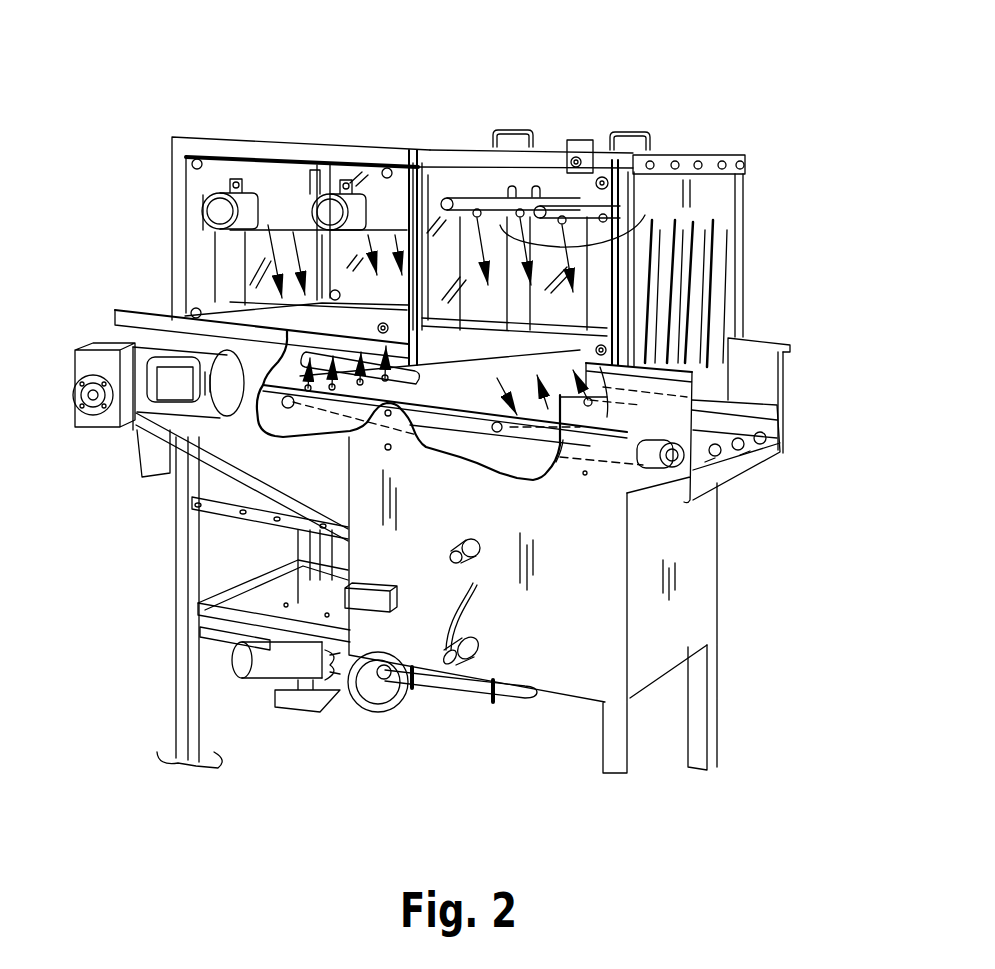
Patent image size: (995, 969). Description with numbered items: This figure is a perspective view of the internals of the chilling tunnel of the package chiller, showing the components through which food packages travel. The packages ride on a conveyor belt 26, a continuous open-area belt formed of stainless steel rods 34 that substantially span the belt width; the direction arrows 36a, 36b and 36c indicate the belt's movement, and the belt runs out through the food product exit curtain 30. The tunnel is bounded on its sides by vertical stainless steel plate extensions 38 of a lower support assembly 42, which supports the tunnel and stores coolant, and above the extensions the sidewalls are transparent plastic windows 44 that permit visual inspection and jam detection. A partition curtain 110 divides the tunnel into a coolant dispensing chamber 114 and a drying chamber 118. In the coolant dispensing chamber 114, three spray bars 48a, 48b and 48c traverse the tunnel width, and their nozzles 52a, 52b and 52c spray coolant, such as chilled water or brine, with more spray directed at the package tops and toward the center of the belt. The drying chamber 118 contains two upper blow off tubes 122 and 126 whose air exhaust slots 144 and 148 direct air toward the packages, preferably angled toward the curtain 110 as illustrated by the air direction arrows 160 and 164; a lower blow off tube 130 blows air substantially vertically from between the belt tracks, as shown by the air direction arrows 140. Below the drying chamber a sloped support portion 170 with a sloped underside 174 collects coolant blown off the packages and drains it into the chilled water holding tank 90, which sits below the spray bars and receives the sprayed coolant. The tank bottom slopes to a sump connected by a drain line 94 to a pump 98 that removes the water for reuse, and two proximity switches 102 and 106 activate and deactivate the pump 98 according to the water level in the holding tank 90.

The drying chamber 118 is at (420, 117).
The coolant dispensing chamber 114 is at (633, 117).
The upper blow off tube 126 is at (295, 225).
The upper blow off tube 122 is at (403, 229).
The air direction arrow 164 is at (235, 263).
The air exhaust slot 148 is at (318, 282).
The air direction arrow 160 is at (315, 175).
The food product exit curtain 30 is at (212, 188).
The air exhaust slot 144 is at (403, 272).
The air direction arrows 140 is at (382, 376).
The curtain 110 is at (430, 193).
The spray bar 48b is at (467, 200).
The spray bar 48a is at (556, 208).
The nozzle 52b is at (500, 215).
The nozzle 52a is at (645, 215).
The windows 44 is at (582, 319).
The conveyor belt 26 is at (343, 417).
The vertical stainless steel plate extensions 38 is at (790, 343).
The stainless steel rods 34 is at (773, 427).
The direction arrow 36a is at (596, 420).
The direction arrow 36c is at (642, 475).
The direction arrow 36b is at (42, 380).
The chilled water holding tank 90 is at (732, 548).
The lower blow off tube 130 is at (293, 405).
The nozzle 52c is at (492, 418).
The spray bar 48c is at (556, 462).
The sloped support portion 170 is at (232, 474).
The sloped underside 174 is at (270, 490).
The lower support assembly 42 is at (172, 638).
The pump 98 is at (309, 681).
The drain line 94 is at (517, 693).
The proximity switch 102 is at (443, 553).
The proximity switch 106 is at (475, 665).